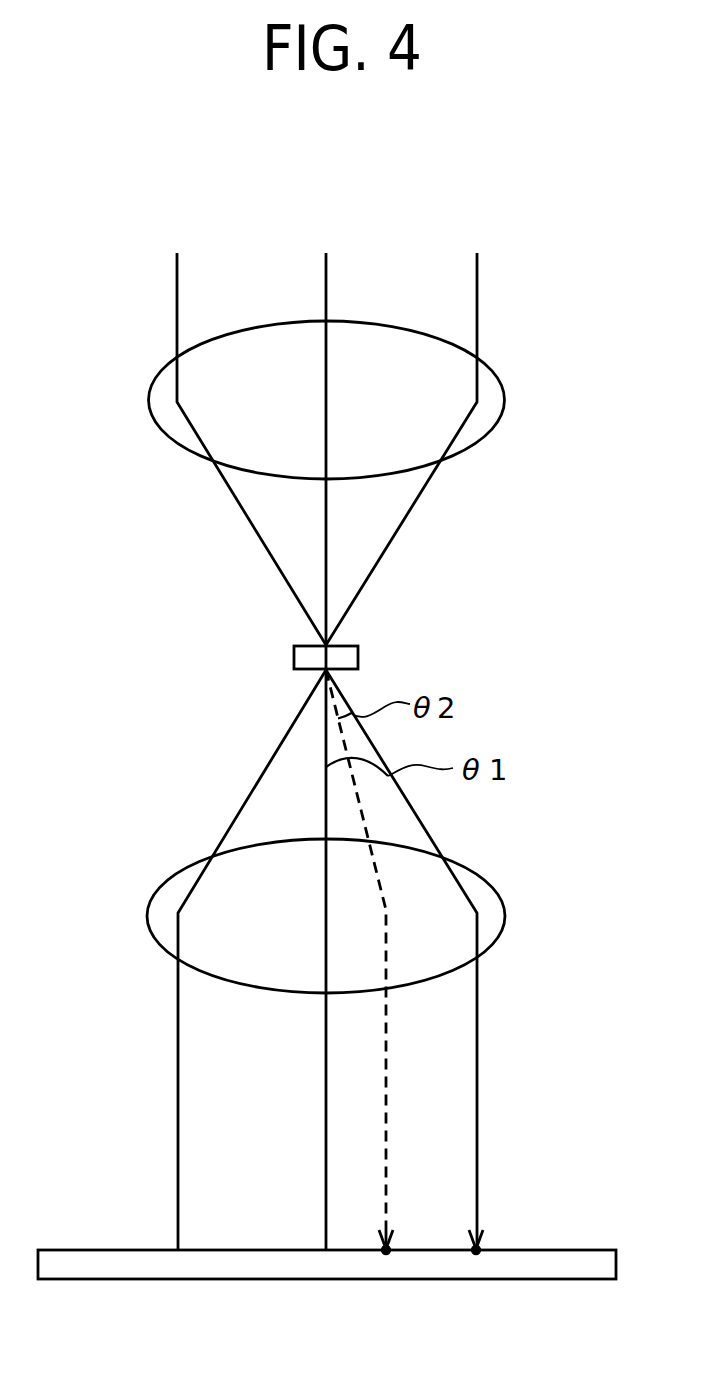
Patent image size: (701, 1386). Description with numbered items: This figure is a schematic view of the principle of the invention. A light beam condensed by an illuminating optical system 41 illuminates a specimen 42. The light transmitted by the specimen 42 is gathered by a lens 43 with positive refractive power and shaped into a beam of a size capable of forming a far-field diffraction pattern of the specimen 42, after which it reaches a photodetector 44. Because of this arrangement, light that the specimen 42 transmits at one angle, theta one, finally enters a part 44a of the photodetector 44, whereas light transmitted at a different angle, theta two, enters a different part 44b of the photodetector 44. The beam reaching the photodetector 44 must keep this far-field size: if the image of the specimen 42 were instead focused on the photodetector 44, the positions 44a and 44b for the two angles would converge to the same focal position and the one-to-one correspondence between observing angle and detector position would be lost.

The illuminating optical system 41 is at (505, 402).
The specimen 42 is at (358, 660).
The lens with positive refractive power 43 is at (505, 913).
The photodetector 44 is at (580, 1250).
The part of the photodetector 44a is at (476, 1280).
The part of the photodetector 44b is at (387, 1280).